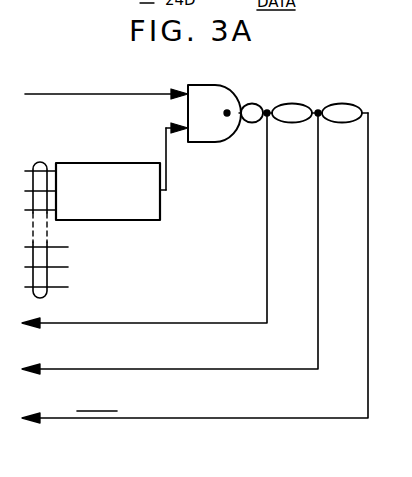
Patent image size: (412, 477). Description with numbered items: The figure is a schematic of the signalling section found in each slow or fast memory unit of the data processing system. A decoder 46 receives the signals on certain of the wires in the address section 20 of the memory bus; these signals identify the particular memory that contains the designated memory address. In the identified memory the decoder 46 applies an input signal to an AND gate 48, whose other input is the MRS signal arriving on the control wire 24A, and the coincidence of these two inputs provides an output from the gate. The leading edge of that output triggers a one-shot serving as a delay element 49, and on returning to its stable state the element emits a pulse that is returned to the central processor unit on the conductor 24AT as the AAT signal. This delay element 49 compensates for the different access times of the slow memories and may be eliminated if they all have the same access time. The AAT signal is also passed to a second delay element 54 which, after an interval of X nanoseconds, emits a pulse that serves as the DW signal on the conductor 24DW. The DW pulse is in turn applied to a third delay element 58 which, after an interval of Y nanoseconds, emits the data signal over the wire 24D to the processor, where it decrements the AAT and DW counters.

The control wire 24A is at (84, 94).
The decoder 46 is at (97, 163).
The address section 20 is at (48, 238).
The AND gate 48 is at (207, 85).
The delay element 49 is at (254, 104).
The second delay element 54 is at (302, 104).
The third delay element 58 is at (353, 104).
The conductor 24AT is at (162, 323).
The conductor 24DW is at (140, 369).
The wire 24D is at (223, 418).